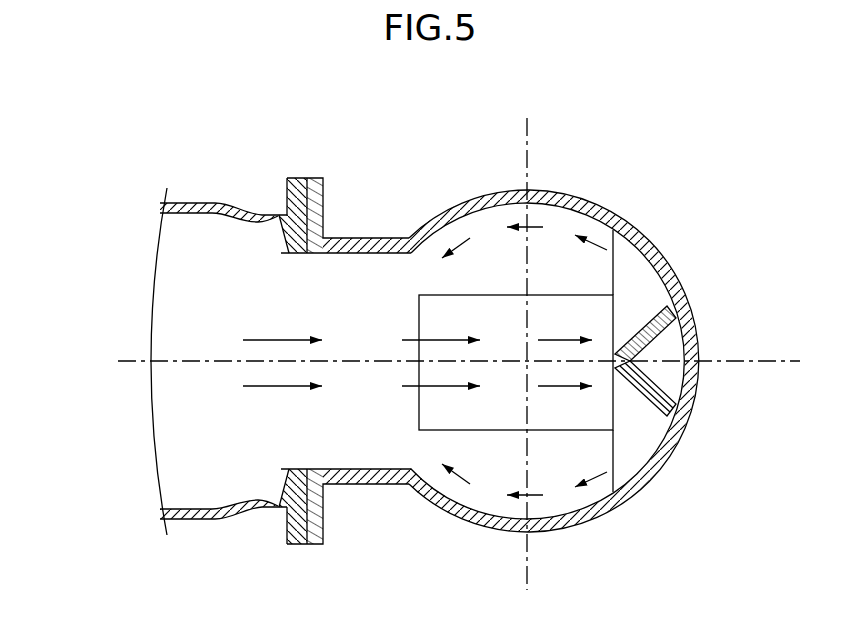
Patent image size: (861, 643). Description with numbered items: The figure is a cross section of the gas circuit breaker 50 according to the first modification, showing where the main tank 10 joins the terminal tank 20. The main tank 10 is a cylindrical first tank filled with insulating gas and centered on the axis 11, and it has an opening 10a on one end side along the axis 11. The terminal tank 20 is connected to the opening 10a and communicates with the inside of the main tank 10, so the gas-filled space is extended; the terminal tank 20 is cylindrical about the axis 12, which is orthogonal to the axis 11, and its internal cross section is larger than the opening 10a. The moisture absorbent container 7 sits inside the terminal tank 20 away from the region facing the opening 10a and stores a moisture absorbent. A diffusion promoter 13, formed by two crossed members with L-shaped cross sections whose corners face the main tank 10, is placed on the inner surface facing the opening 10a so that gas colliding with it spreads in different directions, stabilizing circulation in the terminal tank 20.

The gas circuit breaker 50 is at (385, 148).
The main tank 10 is at (200, 202).
The opening 10a is at (281, 236).
The moisture absorbent container 7 is at (488, 295).
The terminal tank 20 is at (616, 230).
The axis 11 is at (733, 359).
The axis 12 is at (535, 368).
The diffusion promoter 13 is at (650, 395).